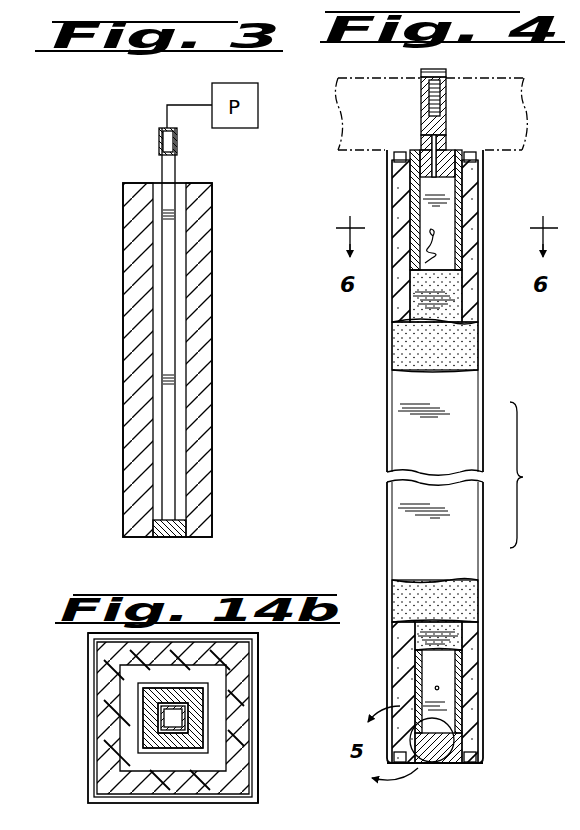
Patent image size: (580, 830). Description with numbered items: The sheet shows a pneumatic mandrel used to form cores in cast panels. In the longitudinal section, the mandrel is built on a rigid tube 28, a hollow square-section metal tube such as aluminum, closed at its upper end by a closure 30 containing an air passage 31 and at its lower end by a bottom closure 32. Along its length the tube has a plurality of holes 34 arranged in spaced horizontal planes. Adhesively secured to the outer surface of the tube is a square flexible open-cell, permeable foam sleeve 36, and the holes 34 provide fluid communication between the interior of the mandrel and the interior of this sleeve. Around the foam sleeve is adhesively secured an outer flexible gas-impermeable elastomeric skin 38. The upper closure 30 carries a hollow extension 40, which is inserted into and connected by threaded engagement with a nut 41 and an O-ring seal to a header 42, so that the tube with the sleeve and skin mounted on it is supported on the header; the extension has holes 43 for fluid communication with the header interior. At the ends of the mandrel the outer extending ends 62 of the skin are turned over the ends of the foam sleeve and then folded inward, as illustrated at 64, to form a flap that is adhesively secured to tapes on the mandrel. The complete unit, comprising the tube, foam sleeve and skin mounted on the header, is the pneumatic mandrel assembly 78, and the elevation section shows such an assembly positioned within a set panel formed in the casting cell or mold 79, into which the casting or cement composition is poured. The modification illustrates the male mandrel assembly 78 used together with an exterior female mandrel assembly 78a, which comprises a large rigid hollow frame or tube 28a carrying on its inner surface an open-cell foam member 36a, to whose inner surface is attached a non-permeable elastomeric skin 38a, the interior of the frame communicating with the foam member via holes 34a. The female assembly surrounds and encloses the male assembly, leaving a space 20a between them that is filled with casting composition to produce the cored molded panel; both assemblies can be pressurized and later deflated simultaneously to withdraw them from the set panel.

In FIG. 3, the casting cell or mold 79 is at (190, 183).
In FIG. 3, the pneumatic mandrel assembly 78 is at (162, 297).
In FIG. 4, the pneumatic mandrel assembly 78 is at (488, 386).
In FIG. 14b, the pneumatic mandrel assembly 78 is at (207, 735).
In FIG. 3, the header 42 is at (160, 142).
In FIG. 4, the header 42 is at (538, 92).
In FIG. 4, the nut 41 is at (426, 70).
In FIG. 4, the hollow extension 40 is at (446, 129).
In FIG. 4, the holes or apertures 43 is at (420, 135).
In FIG. 4, the outer extending ends of the flexible skin 62 is at (474, 152).
In FIG. 4, the closure 30 is at (470, 163).
In FIG. 4, the air passage 31 is at (432, 170).
In FIG. 4, the rigid tube 28 is at (440, 192).
In FIG. 4, the holes 34 is at (431, 247).
In FIG. 4, the flexible foam sleeve 36 is at (470, 306).
In FIG. 4, the elastomeric skin 38 is at (480, 643).
In FIG. 4, the bottom closure 32 is at (455, 748).
In FIG. 4, the inwardly folded portion 64 is at (460, 766).
In FIG. 14b, the rigid hollow frame or tube 28a is at (247, 658).
In FIG. 14b, the holes 34a is at (167, 673).
In FIG. 14b, the space 20a is at (113, 681).
In FIG. 14b, the non-permeable elastomeric skin 38a is at (223, 717).
In FIG. 14b, the open-cell foam member 36a is at (227, 763).
In FIG. 14b, the female mandrel assembly 78a is at (258, 703).